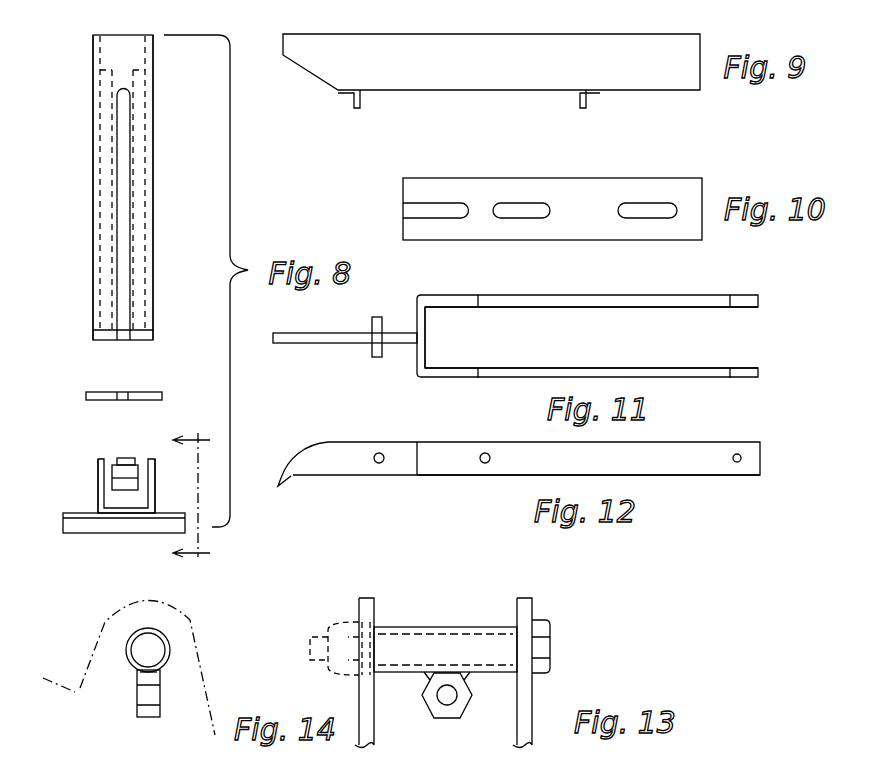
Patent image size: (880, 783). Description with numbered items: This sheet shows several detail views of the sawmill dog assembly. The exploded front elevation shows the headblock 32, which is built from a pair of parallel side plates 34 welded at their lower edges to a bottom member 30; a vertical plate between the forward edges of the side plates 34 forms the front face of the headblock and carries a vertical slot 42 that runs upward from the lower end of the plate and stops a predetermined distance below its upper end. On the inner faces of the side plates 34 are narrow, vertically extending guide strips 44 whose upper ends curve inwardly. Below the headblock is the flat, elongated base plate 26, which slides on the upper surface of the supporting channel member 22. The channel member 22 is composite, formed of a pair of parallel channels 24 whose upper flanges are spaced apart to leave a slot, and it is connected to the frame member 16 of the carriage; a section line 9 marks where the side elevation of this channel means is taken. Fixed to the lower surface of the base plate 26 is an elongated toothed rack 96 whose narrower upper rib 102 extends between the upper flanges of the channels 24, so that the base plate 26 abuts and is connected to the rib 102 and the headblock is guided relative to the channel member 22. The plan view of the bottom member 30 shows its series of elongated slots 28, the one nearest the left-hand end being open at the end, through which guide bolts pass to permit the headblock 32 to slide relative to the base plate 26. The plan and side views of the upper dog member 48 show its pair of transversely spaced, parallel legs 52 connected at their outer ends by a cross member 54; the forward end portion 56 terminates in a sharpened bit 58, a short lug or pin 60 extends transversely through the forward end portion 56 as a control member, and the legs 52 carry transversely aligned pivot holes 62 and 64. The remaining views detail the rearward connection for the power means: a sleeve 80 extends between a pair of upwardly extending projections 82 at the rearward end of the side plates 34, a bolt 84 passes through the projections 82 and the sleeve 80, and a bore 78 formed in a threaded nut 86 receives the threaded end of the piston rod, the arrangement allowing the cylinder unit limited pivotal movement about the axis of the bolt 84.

In FIG. 8, the section line 9- 9 is at (197, 496).
In FIG. 8, the frame member 16 is at (66, 520).
In FIG. 9, the frame member 16 is at (362, 104).
In FIG. 8, the supporting channel member 22 is at (90, 494).
In FIG. 9, the supporting channel member 22 is at (572, 44).
In FIG. 8, the parallel channels 24 is at (100, 472).
In FIG. 8, the base plate 26 is at (136, 396).
In FIG. 8, the elongated slots 28 is at (123, 393).
In FIG. 10, the elongated slots 28 is at (437, 210).
In FIG. 8, the bottom member 30 is at (105, 335).
In FIG. 10, the bottom member 30 is at (596, 188).
In FIG. 8, the headblock 32 is at (84, 214).
In FIG. 8, the side plates 34 is at (96, 152).
In FIG. 8, the vertical slot 42 is at (122, 168).
In FIG. 8, the guide strip 44 is at (98, 103).
In FIG. 11, the dog member 48 is at (555, 295).
In FIG. 12, the dog member 48 is at (682, 440).
In FIG. 11, the legs 52 is at (612, 303).
In FIG. 12, the legs 52 is at (510, 469).
In FIG. 11, the cross member 54 is at (430, 343).
In FIG. 11, the forward end portion 56 is at (345, 340).
In FIG. 12, the forward end portion 56 is at (340, 449).
In FIG. 12, the sharpened bit 58 is at (283, 482).
In FIG. 11, the lug or pin 60 is at (372, 322).
In FIG. 12, the lug or pin 60 is at (380, 464).
In FIG. 11, the pivot hole 62 is at (480, 296).
In FIG. 12, the pivot hole 62 is at (482, 453).
In FIG. 11, the pivot hole 64 is at (742, 290).
In FIG. 12, the pivot hole 64 is at (742, 458).
In FIG. 13, the bore 78 is at (443, 698).
In FIG. 14, the bore 78 is at (137, 695).
In FIG. 13, the sleeve 80 is at (436, 627).
In FIG. 14, the sleeve 80 is at (163, 637).
In FIG. 13, the upwardly extending projections 82 is at (362, 600).
In FIG. 13, the bolt 84 is at (545, 652).
In FIG. 13, the threaded nut 86 is at (458, 718).
In FIG. 14, the threaded nut 86 is at (158, 719).
In FIG. 8, the toothed rack 96 is at (122, 484).
In FIG. 8, the upper rib 102 is at (126, 458).